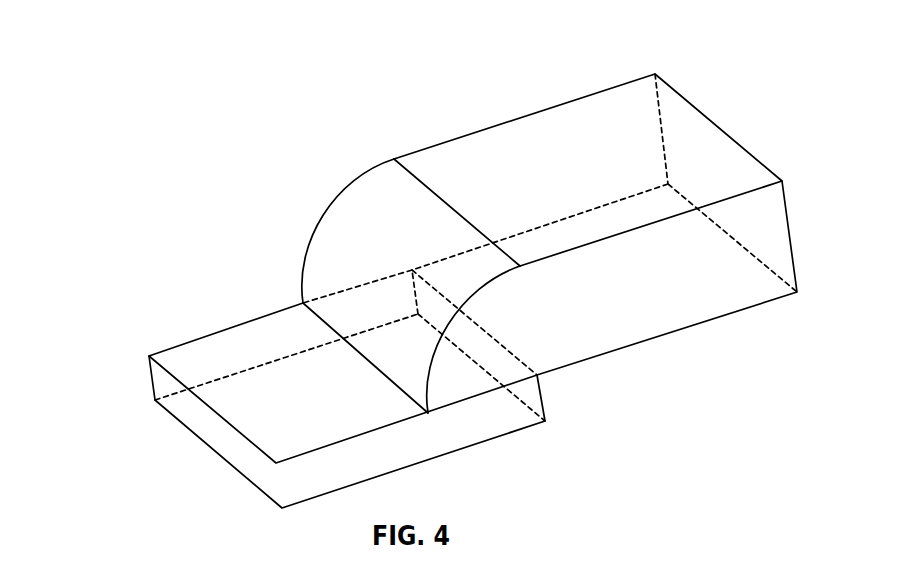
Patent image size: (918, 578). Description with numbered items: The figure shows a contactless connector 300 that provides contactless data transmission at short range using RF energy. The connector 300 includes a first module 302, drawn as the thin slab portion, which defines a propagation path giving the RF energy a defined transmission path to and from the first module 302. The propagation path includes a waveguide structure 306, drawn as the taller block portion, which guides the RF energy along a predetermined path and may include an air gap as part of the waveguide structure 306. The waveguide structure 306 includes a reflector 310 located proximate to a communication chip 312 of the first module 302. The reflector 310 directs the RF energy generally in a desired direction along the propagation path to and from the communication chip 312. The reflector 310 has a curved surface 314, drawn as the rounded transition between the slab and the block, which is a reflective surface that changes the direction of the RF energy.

The contactless connector 300 is at (431, 285).
The first module 302 is at (290, 401).
The waveguide structure 306 is at (610, 207).
The reflector 310 is at (452, 155).
The communication chip 312 is at (257, 425).
The curved surface 314 is at (333, 203).